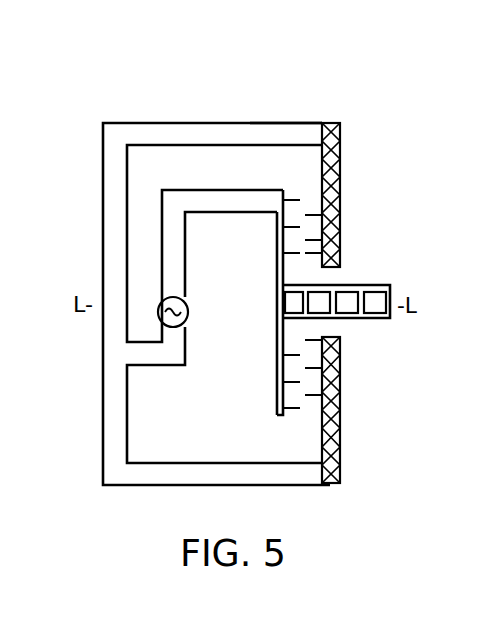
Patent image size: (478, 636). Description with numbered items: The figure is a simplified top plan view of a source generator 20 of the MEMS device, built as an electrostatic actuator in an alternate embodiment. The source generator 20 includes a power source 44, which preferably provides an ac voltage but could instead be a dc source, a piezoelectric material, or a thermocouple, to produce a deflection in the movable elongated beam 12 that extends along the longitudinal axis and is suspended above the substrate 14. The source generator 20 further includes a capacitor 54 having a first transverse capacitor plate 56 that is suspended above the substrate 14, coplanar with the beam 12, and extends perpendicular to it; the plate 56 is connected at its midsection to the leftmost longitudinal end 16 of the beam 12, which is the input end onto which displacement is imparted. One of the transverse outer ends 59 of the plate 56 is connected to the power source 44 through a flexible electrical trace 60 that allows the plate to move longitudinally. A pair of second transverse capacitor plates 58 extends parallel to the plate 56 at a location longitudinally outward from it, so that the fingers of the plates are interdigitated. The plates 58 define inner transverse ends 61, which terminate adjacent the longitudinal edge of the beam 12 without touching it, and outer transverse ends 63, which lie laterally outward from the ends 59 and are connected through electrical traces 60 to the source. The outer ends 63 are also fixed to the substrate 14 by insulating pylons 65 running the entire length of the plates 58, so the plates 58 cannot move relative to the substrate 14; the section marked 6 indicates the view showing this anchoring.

The source generator 20 is at (82, 104).
The electrical trace 60 is at (164, 123).
The capacitor 54 is at (293, 121).
The outer transverse ends 63 is at (332, 122).
The insulating pylons 65 is at (342, 133).
The transverse outer ends 59 is at (297, 188).
The first transverse capacitor plate 56 is at (277, 242).
The second transverse capacitor plates 58 is at (342, 222).
The inner transverse ends 61 is at (328, 269).
The beam 12 is at (373, 283).
The leftmost longitudinal end 16 is at (277, 298).
The power source 44 is at (160, 305).
The section line 6 is at (322, 440).
The substrate 14 is at (357, 538).